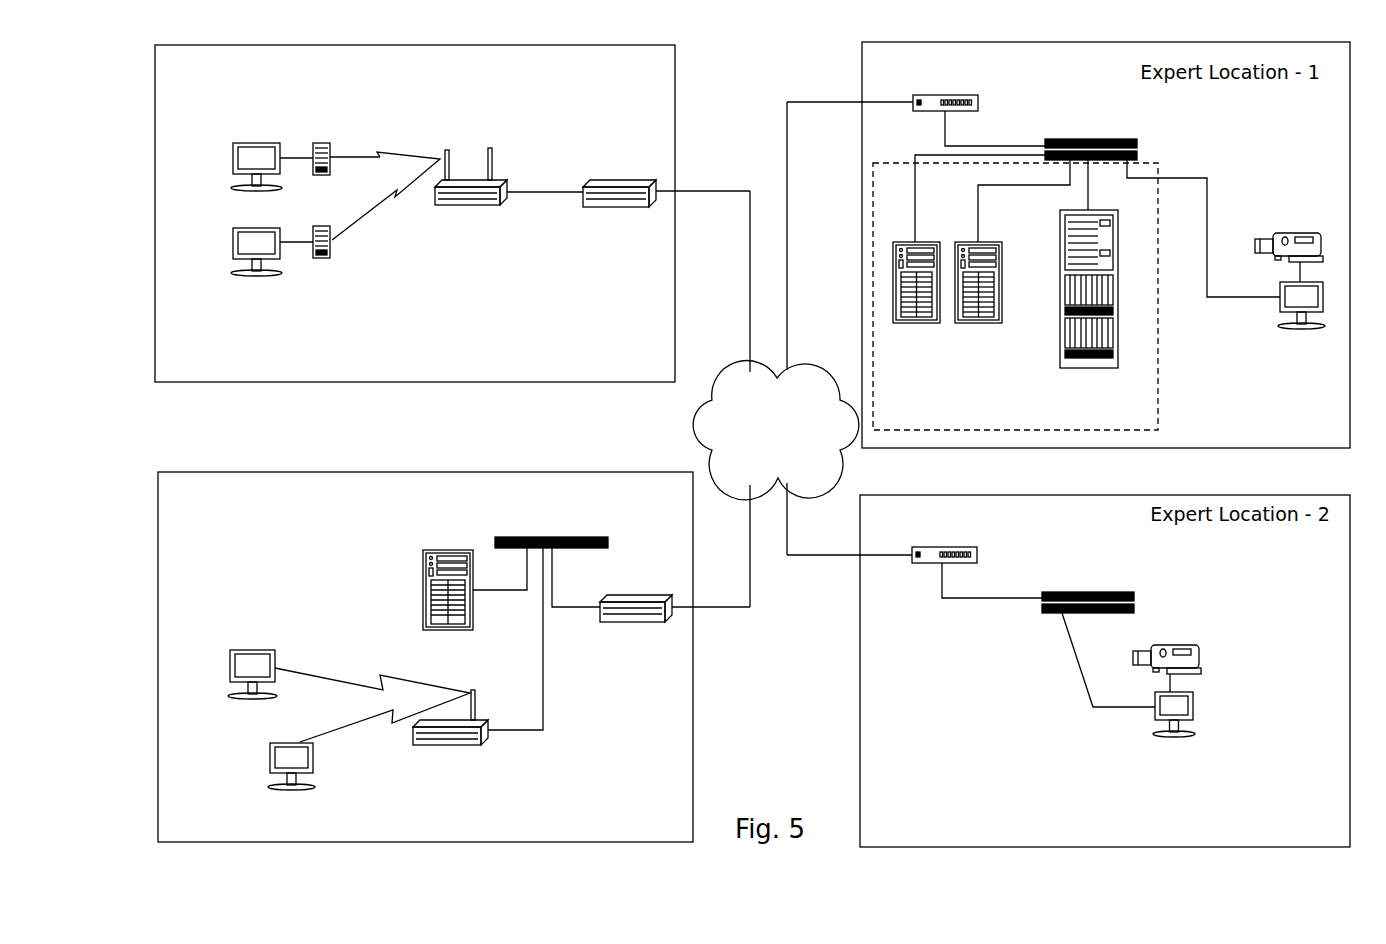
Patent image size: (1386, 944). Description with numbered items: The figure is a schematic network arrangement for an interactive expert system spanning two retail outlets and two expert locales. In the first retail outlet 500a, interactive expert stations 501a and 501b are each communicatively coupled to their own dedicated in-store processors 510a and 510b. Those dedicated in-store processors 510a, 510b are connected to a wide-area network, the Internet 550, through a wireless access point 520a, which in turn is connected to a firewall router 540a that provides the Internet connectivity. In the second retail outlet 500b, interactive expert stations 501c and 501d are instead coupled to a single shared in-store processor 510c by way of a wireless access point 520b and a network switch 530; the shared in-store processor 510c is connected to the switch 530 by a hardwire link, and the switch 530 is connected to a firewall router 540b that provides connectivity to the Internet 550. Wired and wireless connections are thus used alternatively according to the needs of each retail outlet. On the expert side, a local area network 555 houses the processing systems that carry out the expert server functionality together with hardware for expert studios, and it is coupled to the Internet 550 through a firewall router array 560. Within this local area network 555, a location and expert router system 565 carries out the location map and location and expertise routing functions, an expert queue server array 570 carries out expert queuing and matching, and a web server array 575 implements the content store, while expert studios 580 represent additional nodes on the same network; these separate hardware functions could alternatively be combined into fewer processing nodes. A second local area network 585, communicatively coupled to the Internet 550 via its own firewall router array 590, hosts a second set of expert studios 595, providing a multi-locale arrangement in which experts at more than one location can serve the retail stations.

The retail outlet 500a is at (452, 213).
The retail outlet 500b is at (454, 657).
The interactive expert station 501a is at (265, 142).
The interactive expert station 501b is at (240, 233).
The interactive expert station 501c is at (250, 650).
The interactive expert station 501d is at (290, 745).
The in-store processor 510a is at (325, 142).
The in-store processor 510b is at (332, 260).
The in-store processor 510c is at (463, 550).
The wireless access point 520a is at (505, 180).
The wireless access point 520b is at (490, 735).
The network switch 530 is at (584, 537).
The firewall router 540a is at (626, 180).
The firewall router 540b is at (666, 595).
The Internet 550 is at (776, 430).
The local area network 555 is at (1175, 152).
The firewall router array 560 is at (960, 95).
The location and expert router system 565 is at (1058, 252).
The expert queue server array 570 is at (1003, 293).
The web server array 575 is at (903, 241).
The expert studios 580 is at (1307, 233).
The second local area network 585 is at (1185, 607).
The firewall router array 590 is at (957, 548).
The expert studios 595 is at (1195, 712).